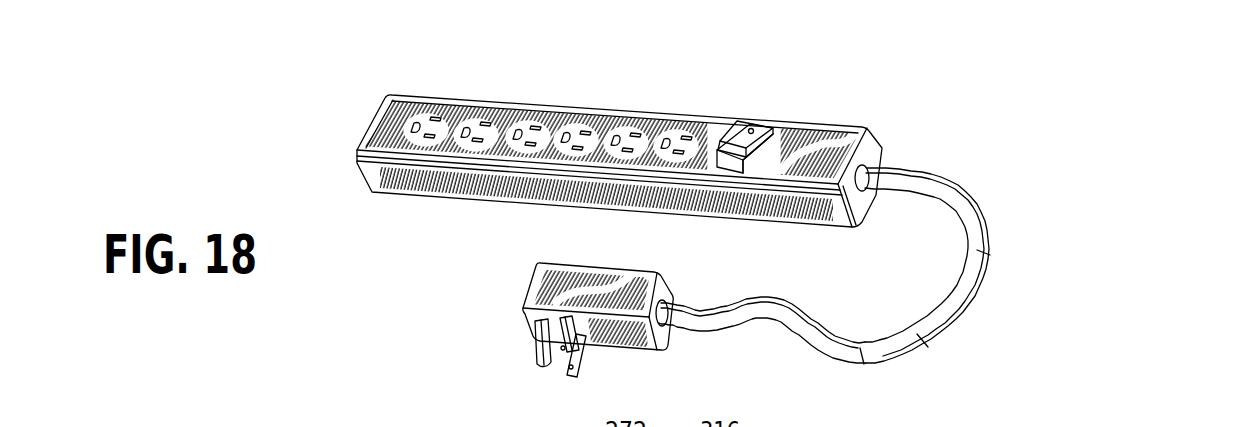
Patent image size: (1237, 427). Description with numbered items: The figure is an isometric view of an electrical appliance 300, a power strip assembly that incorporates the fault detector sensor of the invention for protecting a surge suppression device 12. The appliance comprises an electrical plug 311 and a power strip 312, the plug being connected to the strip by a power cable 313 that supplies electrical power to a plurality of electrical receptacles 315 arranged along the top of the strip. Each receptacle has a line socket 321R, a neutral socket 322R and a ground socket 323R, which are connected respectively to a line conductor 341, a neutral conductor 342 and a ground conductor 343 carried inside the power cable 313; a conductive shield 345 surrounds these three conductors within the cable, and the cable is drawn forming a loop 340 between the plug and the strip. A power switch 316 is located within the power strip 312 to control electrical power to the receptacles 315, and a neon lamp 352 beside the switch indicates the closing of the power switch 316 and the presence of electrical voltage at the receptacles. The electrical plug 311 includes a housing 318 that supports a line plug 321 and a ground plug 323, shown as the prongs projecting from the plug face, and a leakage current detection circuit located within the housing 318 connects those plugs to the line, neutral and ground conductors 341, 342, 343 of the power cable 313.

The electrical appliance 300 is at (322, 76).
The surge suppression device 12 is at (815, 123).
The power strip 312 is at (815, 215).
The electrical receptacles 315 is at (490, 119).
The ground socket 323R is at (412, 127).
The line socket 321R is at (428, 137).
The neutral socket 322R is at (434, 116).
The power switch 316 is at (736, 139).
The neon lamp 352 is at (748, 132).
The power cable 313 is at (826, 328).
The cord loop 340 is at (958, 290).
The conductive shield 345 is at (1003, 253).
The line conductor 341 is at (737, 324).
The neutral conductor 342 is at (810, 339).
The ground conductor 343 is at (862, 374).
The electrical plug 311 is at (543, 273).
The housing 318 is at (537, 302).
The ground plug 323 is at (536, 358).
The line plug 321 is at (569, 369).